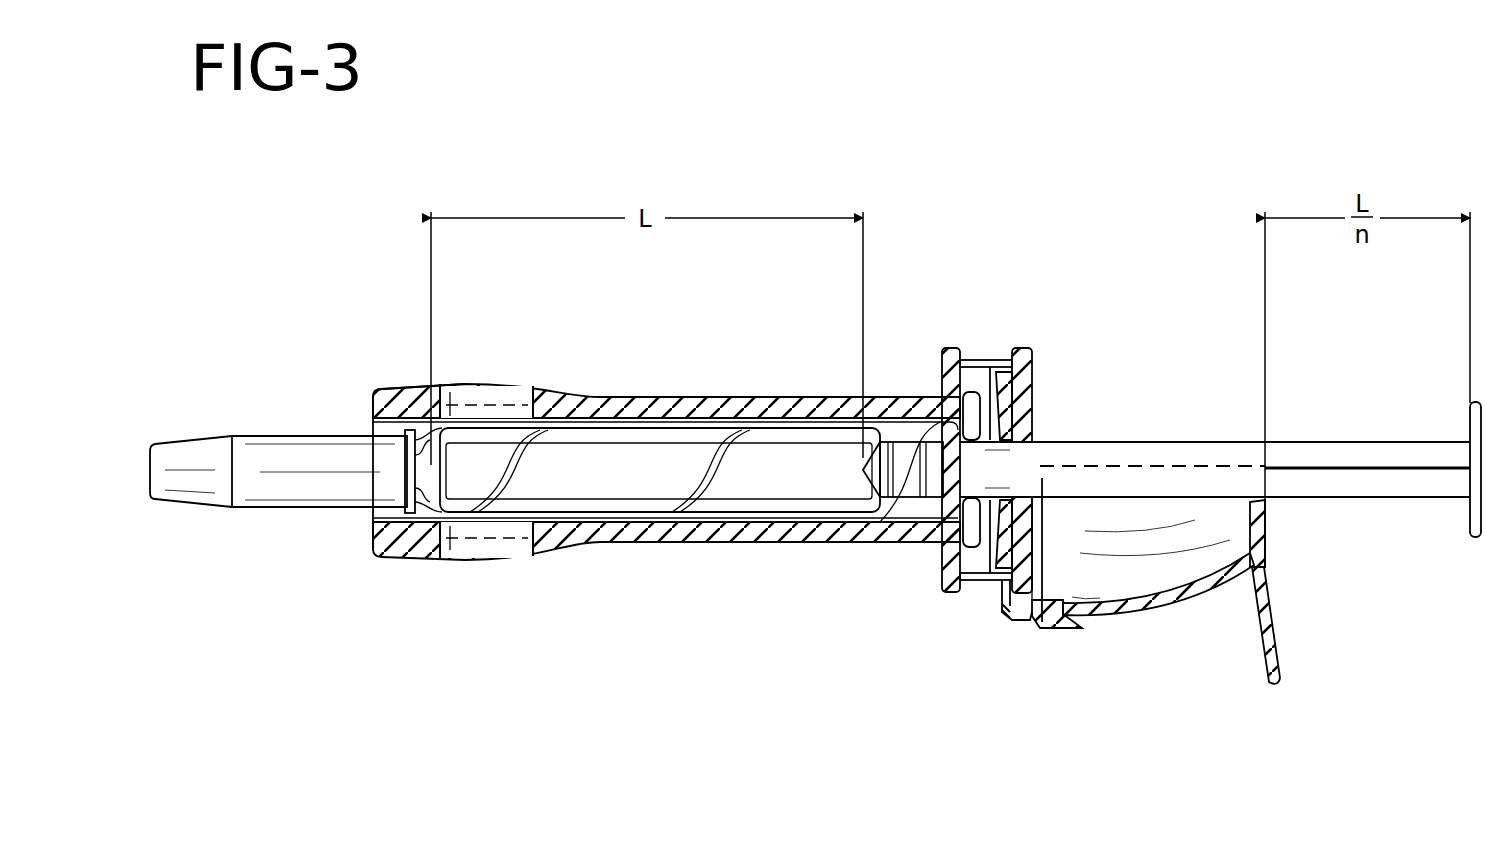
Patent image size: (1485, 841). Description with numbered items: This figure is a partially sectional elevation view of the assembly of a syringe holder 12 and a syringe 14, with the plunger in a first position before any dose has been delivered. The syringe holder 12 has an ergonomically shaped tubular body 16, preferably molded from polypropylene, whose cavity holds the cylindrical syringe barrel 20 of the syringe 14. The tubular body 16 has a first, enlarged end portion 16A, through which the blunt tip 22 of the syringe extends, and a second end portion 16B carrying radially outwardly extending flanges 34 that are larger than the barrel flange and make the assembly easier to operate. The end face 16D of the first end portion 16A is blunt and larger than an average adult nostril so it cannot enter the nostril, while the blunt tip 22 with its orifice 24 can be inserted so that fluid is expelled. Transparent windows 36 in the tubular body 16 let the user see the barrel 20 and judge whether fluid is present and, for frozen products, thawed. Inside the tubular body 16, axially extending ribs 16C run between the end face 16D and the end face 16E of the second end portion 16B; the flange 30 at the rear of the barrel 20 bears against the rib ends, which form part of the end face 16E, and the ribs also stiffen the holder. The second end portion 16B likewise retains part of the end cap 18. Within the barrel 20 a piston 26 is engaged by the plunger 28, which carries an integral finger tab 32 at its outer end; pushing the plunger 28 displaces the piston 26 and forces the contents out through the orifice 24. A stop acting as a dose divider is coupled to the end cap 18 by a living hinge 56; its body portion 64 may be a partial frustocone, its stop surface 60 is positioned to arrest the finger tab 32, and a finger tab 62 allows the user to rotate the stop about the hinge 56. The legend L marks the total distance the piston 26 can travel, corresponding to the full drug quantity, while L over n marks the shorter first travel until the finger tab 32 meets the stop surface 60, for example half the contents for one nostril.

The syringe holder 12 is at (780, 552).
The syringe 14 is at (663, 522).
The tubular body 16 is at (703, 388).
The first, enlarged end portion 16A is at (410, 387).
The second end portion 16B is at (930, 358).
The axially extending ribs 16C is at (810, 397).
The end face of the first end portion 16D is at (375, 408).
The end face of the second end portion 16E is at (975, 362).
The end cap 18 is at (1026, 408).
The syringe barrel 20 is at (618, 432).
The blunt tip 22 is at (193, 436).
The orifice 24 is at (148, 476).
The piston 26 is at (866, 505).
The plunger 28 is at (1205, 441).
The flange 30 is at (993, 360).
The finger tab 32 is at (1470, 420).
The flanges 34 is at (943, 582).
The transparent windows 36 is at (522, 392).
The hinge 56 is at (1015, 626).
The stop surface 60 is at (1268, 537).
The finger tab 62 is at (1265, 656).
The body portion 64 is at (1152, 616).